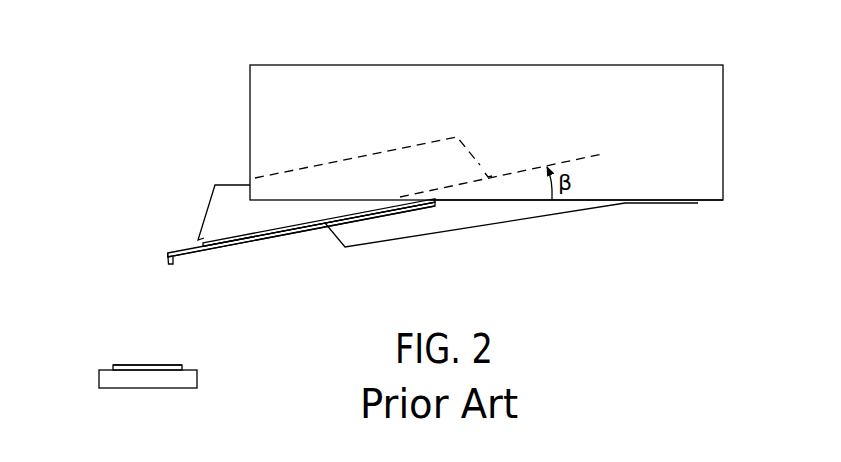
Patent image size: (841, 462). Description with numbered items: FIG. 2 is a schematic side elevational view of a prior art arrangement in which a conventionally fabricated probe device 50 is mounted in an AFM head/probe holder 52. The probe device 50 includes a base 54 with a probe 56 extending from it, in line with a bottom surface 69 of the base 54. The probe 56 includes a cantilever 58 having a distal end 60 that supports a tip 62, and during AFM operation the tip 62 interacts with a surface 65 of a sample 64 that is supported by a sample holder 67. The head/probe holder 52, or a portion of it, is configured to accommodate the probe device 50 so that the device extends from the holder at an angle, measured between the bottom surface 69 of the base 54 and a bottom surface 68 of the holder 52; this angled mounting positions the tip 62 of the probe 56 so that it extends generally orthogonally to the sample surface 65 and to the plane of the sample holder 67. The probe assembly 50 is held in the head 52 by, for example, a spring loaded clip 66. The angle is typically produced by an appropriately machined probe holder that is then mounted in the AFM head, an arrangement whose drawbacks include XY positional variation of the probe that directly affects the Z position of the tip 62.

The probe device 50 is at (112, 193).
The AFM head/probe holder 52 is at (412, 66).
The base 54 is at (213, 215).
The probe 56 is at (185, 277).
The cantilever 58 is at (275, 237).
The distal end 60 is at (160, 243).
The tip 62 is at (170, 265).
The sample 64 is at (122, 365).
The sample surface 65 is at (167, 365).
The spring loaded clip 66 is at (445, 232).
The sample holder 67 is at (92, 380).
The bottom surface of AFM/probe holder 68 is at (587, 200).
The bottom surface of base 69 is at (233, 235).